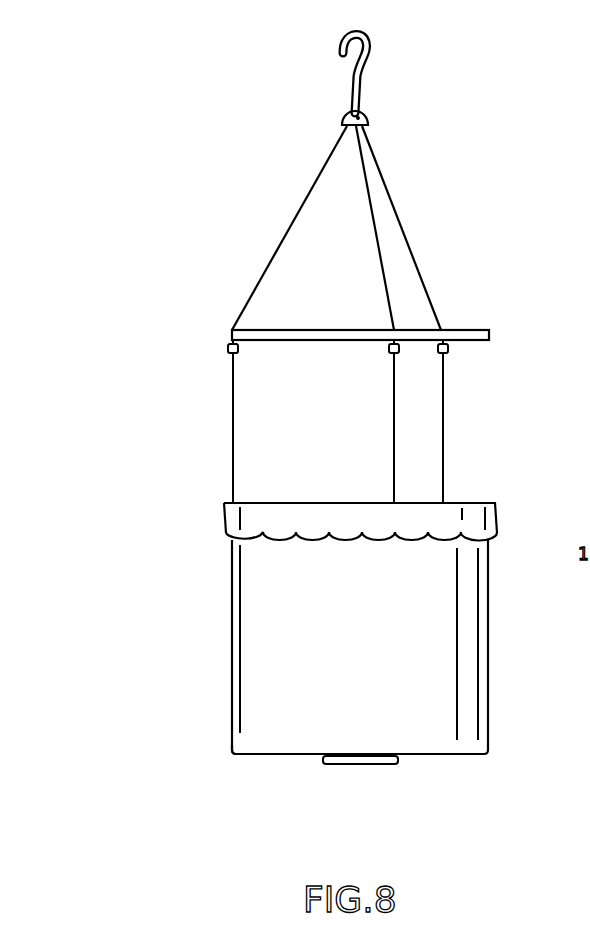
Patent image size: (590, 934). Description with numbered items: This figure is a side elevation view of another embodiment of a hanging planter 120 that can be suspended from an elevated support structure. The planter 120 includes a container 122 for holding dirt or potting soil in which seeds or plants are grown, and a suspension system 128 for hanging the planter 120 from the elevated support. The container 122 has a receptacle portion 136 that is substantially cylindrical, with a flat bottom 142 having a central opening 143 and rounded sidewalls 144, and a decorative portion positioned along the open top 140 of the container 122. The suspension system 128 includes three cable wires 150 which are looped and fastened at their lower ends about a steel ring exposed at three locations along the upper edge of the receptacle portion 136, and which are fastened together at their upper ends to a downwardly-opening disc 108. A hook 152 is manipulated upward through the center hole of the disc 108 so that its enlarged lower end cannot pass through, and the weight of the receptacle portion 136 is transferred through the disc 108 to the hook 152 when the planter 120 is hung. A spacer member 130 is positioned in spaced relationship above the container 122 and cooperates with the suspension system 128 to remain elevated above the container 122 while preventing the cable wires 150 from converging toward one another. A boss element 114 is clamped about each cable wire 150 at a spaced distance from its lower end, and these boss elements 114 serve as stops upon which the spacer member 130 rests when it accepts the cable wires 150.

The hook 152 is at (378, 57).
The downwardly-opening disc 108 is at (367, 121).
The cable wires 150 is at (293, 218).
The spacer member 130 is at (280, 330).
The boss element 114 is at (228, 347).
The suspension system 128 is at (230, 392).
The open top 140 is at (273, 500).
The container 122 is at (273, 600).
The rounded sidewalls 144 is at (267, 653).
The receptacle portion 136 is at (428, 683).
The flat bottom 142 is at (274, 756).
The central opening 143 is at (385, 765).
The planter 120 is at (103, 517).